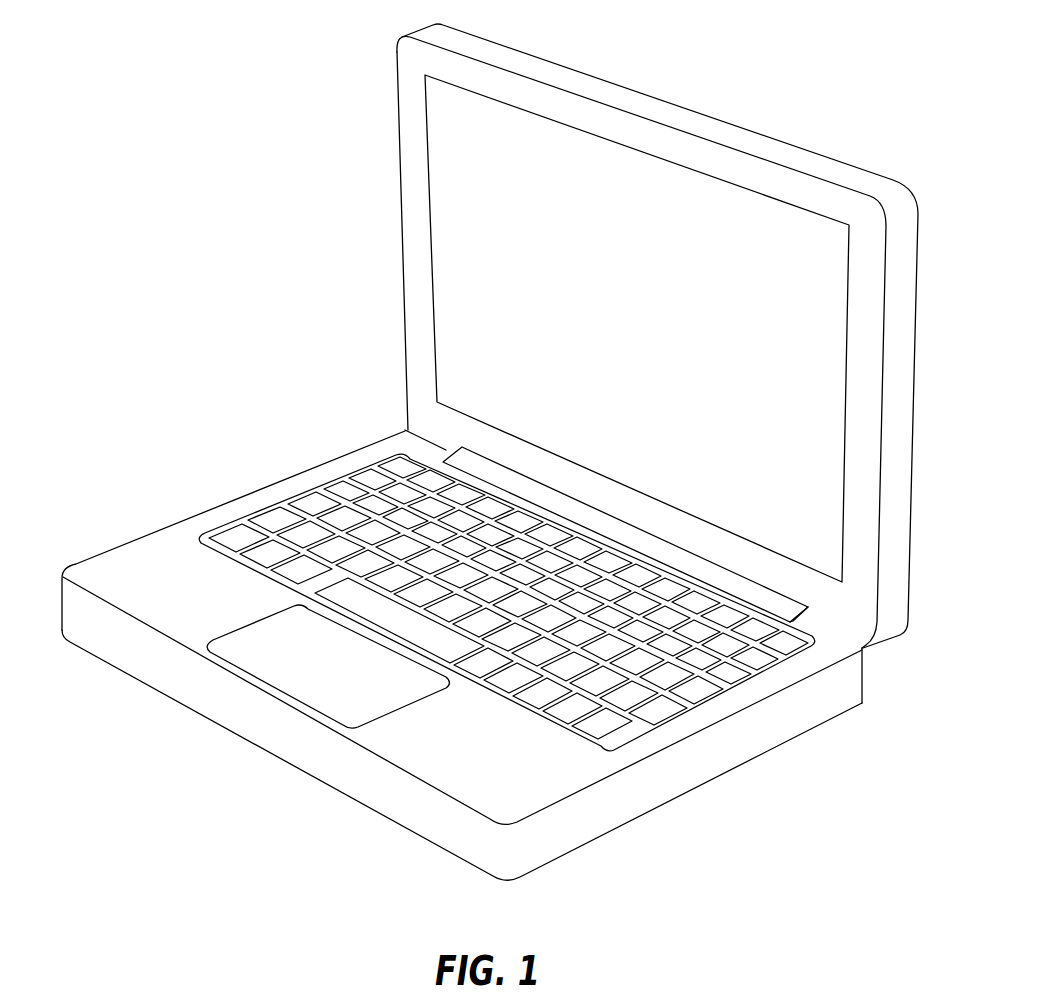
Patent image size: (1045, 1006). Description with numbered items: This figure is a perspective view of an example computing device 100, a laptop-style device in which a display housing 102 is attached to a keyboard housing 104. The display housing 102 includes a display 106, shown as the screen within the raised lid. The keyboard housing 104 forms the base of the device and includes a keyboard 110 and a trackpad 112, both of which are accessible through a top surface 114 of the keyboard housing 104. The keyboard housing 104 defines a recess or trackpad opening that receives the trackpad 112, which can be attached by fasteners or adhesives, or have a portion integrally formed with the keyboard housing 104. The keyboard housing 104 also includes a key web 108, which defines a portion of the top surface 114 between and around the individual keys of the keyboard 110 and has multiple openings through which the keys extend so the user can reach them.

The computing device 100 is at (193, 265).
The display housing 102 is at (880, 543).
The keyboard housing 104 is at (695, 765).
The display 106 is at (590, 170).
The key web 108 is at (215, 523).
The keyboard 110 is at (335, 490).
The trackpad 112 is at (300, 672).
The top surface 114 is at (138, 552).